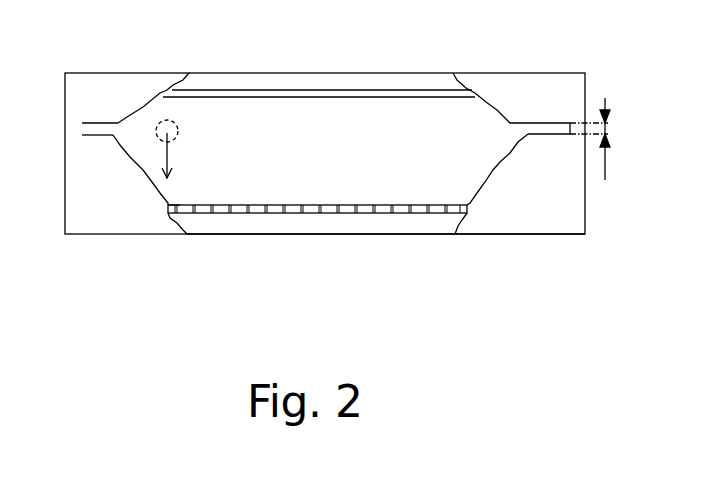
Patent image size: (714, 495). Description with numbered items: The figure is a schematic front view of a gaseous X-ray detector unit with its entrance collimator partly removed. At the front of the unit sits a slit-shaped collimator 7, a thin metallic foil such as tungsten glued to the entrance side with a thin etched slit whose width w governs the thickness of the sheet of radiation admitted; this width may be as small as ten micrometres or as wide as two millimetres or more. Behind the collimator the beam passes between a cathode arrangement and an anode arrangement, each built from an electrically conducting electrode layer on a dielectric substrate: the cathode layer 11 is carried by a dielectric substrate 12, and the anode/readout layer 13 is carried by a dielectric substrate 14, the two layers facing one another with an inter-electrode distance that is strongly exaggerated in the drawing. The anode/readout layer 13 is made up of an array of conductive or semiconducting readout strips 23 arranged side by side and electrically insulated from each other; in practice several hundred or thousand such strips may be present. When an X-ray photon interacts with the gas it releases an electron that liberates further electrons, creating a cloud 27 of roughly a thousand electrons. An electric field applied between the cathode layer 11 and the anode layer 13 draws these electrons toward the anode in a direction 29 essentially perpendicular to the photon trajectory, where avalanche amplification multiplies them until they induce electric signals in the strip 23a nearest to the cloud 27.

The slit-shaped collimator 7 is at (503, 85).
The cathode layer 11 is at (395, 98).
The dielectric substrate 12 is at (308, 73).
The anode/readout layer 13 is at (594, 205).
The dielectric substrate 14 is at (205, 236).
The readout strip 23 is at (293, 205).
The strip nearest to the cloud 23a is at (172, 195).
The electron cloud 27 is at (178, 127).
The direction of electron drift 29 is at (169, 150).
The width of the collimator slit w is at (603, 139).